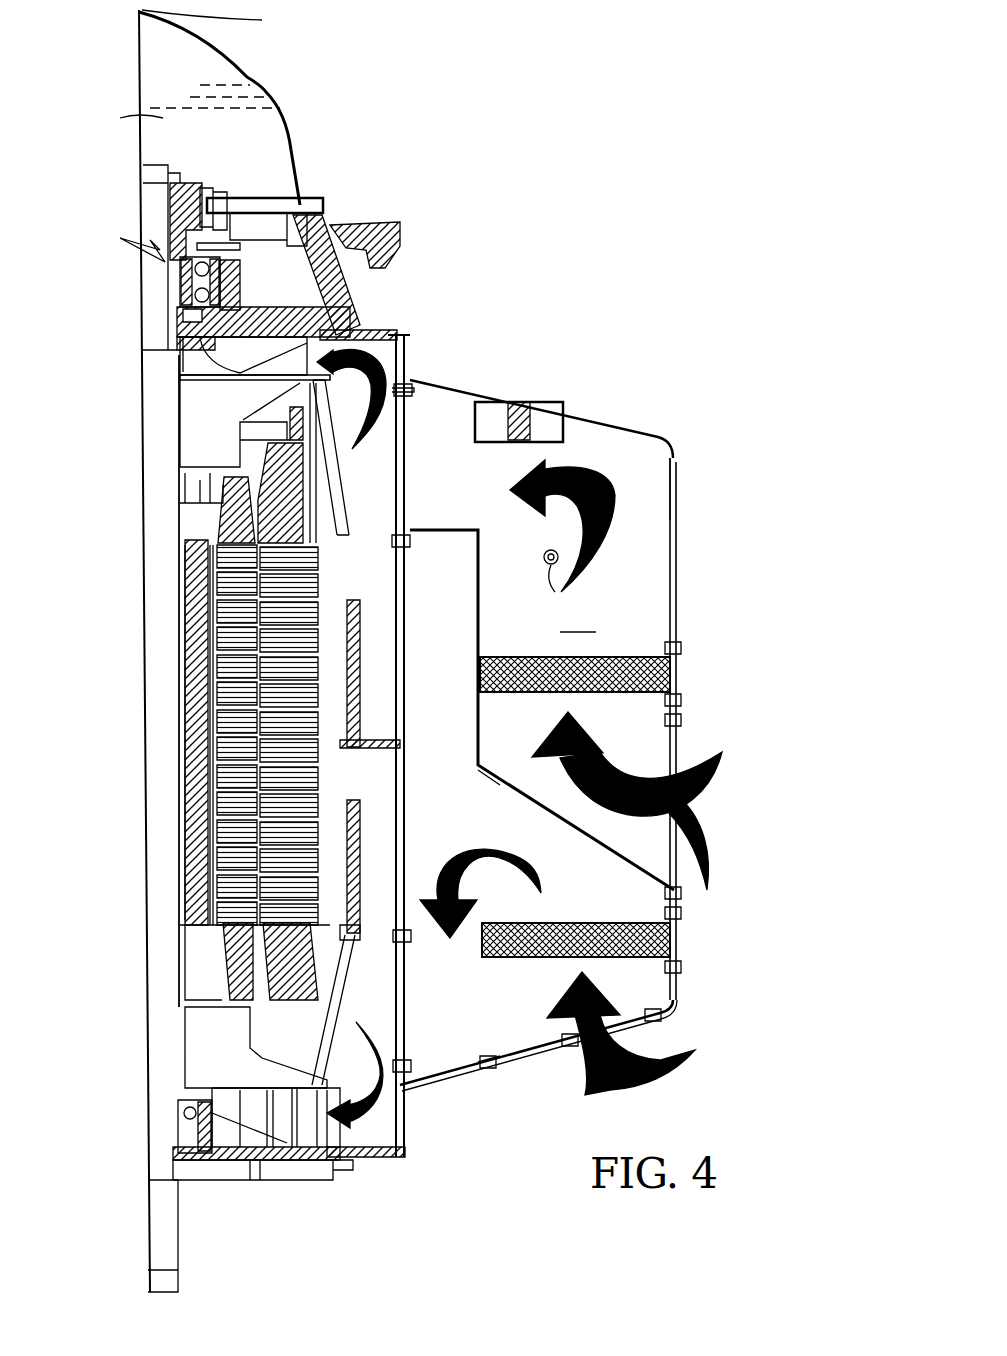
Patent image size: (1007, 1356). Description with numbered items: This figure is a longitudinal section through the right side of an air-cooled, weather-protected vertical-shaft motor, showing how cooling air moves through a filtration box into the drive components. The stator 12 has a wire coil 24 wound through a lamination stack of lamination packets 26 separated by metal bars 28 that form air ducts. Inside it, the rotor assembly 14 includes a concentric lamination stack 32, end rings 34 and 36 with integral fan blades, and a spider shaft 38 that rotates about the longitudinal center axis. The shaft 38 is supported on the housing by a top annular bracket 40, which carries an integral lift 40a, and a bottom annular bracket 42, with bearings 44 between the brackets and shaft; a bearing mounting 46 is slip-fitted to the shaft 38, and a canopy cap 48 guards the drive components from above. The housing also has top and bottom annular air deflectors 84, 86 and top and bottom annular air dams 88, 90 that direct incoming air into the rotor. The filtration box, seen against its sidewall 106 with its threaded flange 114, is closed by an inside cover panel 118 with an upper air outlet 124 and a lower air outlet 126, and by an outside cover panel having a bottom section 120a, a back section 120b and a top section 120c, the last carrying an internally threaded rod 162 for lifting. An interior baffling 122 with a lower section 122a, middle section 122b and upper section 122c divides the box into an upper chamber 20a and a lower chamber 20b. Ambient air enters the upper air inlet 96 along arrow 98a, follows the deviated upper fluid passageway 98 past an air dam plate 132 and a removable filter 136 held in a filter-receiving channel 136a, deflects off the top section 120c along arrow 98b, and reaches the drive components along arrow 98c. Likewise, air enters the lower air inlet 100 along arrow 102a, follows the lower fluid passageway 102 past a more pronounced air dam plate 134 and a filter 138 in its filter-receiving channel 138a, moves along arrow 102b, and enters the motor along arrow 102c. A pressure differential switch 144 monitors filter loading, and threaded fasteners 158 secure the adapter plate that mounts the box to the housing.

The stator 12 is at (262, 428).
The rotor assembly 14 is at (180, 752).
The upper chamber 20a is at (627, 577).
The lower chamber 20b is at (640, 893).
The wire coil 24 is at (245, 456).
The lamination packets 26 is at (205, 586).
The metal bars 28 is at (228, 640).
The lamination stack 32 is at (278, 690).
The end ring 34 is at (188, 490).
The end ring 36 is at (212, 972).
The shaft 38 is at (197, 840).
The top annular bracket 40 is at (176, 326).
The lift 40a is at (388, 252).
The bottom annular bracket 42 is at (200, 1140).
The bearings 44 is at (180, 290).
The bearing mounting 46 is at (165, 212).
The canopy cap 48 is at (165, 118).
The top annular air deflector 84 is at (200, 394).
The bottom annular air deflector 86 is at (210, 1044).
The top annular air dam 88 is at (342, 508).
The bottom annular air dam 90 is at (355, 972).
The upper air inlet 96 is at (666, 718).
The upper fluid passageway 98 is at (626, 526).
The arrow 98a is at (692, 792).
The arrow 98b is at (620, 492).
The arrow 98c is at (397, 336).
The lower air inlet 100 is at (518, 1046).
The lower fluid passageway 102 is at (612, 973).
The arrow 102a is at (668, 1048).
The arrow 102b is at (490, 852).
The arrow 102c is at (410, 1135).
The sidewall 106 is at (579, 620).
The threaded flange 114 is at (555, 550).
The inside cover panel 118 is at (408, 665).
The bottom section 120a is at (462, 1075).
The back section 120b is at (674, 624).
The top section 120c is at (600, 425).
The interior baffling 122 is at (474, 756).
The lower section 122a is at (500, 792).
The middle section 122b is at (478, 612).
The upper section 122c is at (432, 533).
The upper air outlet 124 is at (410, 455).
The lower air outlet 126 is at (414, 1010).
The air dam plate 132 is at (674, 726).
The air dam plate 134 is at (480, 975).
The filter 136 is at (656, 672).
The filter-receiving channel 136a is at (572, 656).
The filter 138 is at (655, 942).
The filter-receiving channel 138a is at (572, 924).
The pressure differential switch 144 is at (557, 590).
The threaded fasteners 158 is at (416, 378).
The internally threaded rod 162 is at (533, 404).